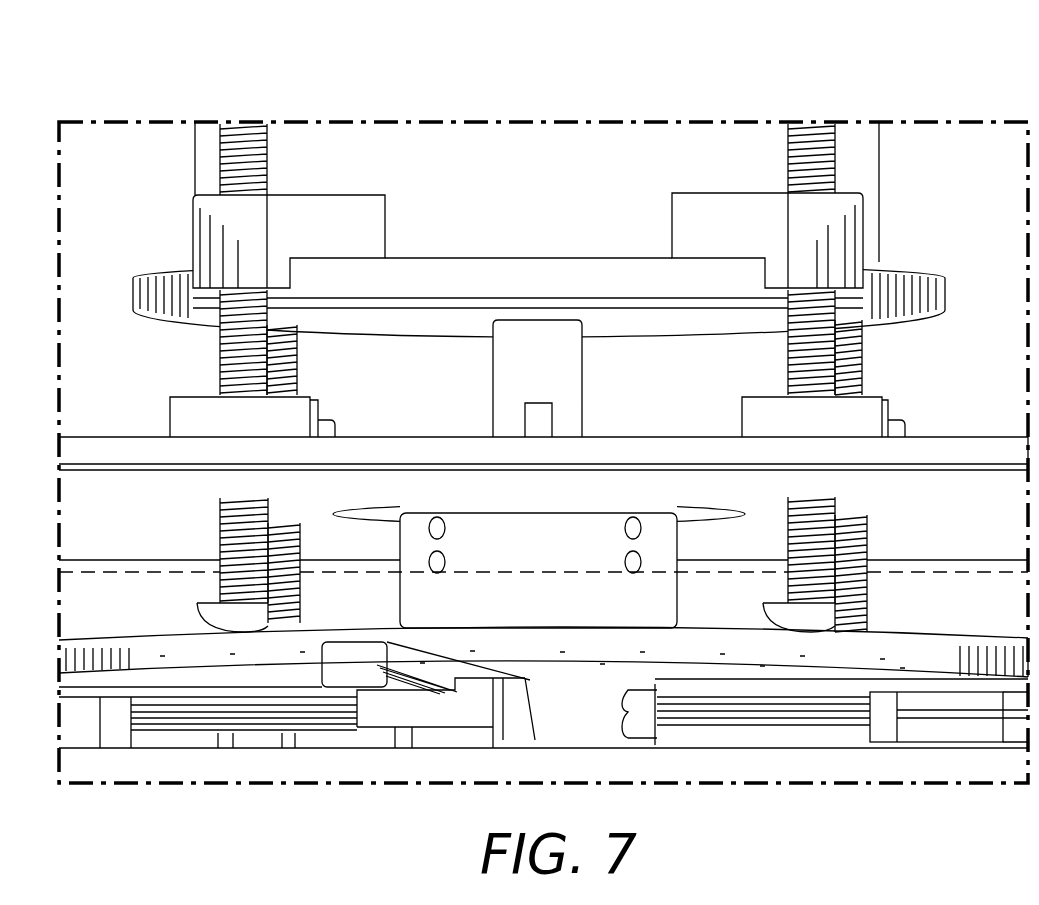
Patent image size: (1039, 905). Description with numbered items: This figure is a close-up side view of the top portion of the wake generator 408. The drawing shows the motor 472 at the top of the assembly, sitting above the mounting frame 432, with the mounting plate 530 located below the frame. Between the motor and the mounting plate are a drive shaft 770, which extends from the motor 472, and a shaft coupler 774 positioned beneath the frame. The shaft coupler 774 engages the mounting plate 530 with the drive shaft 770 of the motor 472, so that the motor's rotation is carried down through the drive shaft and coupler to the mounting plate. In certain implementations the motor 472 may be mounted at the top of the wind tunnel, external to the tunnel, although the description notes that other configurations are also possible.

The wake generator 408 is at (149, 49).
The motor 472 is at (533, 144).
The mounting frame 432 is at (135, 453).
The drive shaft 770 is at (564, 390).
The shaft coupler 774 is at (567, 553).
The mounting plate 530 is at (162, 662).